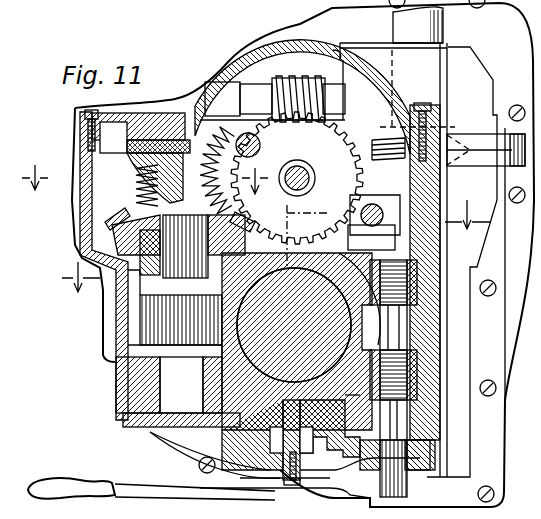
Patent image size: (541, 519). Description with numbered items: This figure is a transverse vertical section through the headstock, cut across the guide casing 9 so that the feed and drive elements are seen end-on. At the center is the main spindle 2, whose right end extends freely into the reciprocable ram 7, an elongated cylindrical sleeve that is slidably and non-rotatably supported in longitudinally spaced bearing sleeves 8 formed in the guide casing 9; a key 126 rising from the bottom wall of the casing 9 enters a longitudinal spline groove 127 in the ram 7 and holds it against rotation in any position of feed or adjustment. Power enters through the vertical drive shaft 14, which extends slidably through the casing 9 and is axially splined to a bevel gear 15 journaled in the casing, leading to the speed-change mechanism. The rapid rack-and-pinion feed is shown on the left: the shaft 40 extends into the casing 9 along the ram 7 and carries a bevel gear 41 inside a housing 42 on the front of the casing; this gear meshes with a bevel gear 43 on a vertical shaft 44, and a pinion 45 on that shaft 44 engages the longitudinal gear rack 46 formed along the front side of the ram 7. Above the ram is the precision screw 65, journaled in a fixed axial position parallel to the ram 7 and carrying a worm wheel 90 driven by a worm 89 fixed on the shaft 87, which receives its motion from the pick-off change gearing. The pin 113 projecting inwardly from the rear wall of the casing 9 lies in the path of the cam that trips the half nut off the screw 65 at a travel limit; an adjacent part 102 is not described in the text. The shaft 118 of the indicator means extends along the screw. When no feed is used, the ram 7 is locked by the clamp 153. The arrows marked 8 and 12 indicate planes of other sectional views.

The main spindle 2 is at (322, 354).
The reciprocable ram 7 is at (345, 394).
The bearing sleeves 8 is at (145, 189).
The guide casing 9 is at (255, 466).
The section line 12 is at (276, 251).
The vertical drive shaft 14 is at (443, 23).
The bevel gear 15 is at (378, 140).
The shaft 40 is at (183, 173).
The bevel gear 41 is at (137, 185).
The housing 42 is at (80, 205).
The bevel gear 43 is at (126, 216).
The vertical shaft 44 is at (170, 279).
The pinion 45 is at (145, 326).
The gear rack 46 is at (215, 296).
The screw 65 is at (307, 172).
The parallel shaft 87 is at (255, 92).
The worm 89 is at (291, 80).
The worm wheel 90 is at (352, 168).
The bracket 102 is at (352, 237).
The pin 113 is at (374, 204).
The shaft 118 is at (261, 146).
The key 126 is at (304, 413).
The spline groove 127 is at (284, 406).
The clamp 153 is at (425, 375).